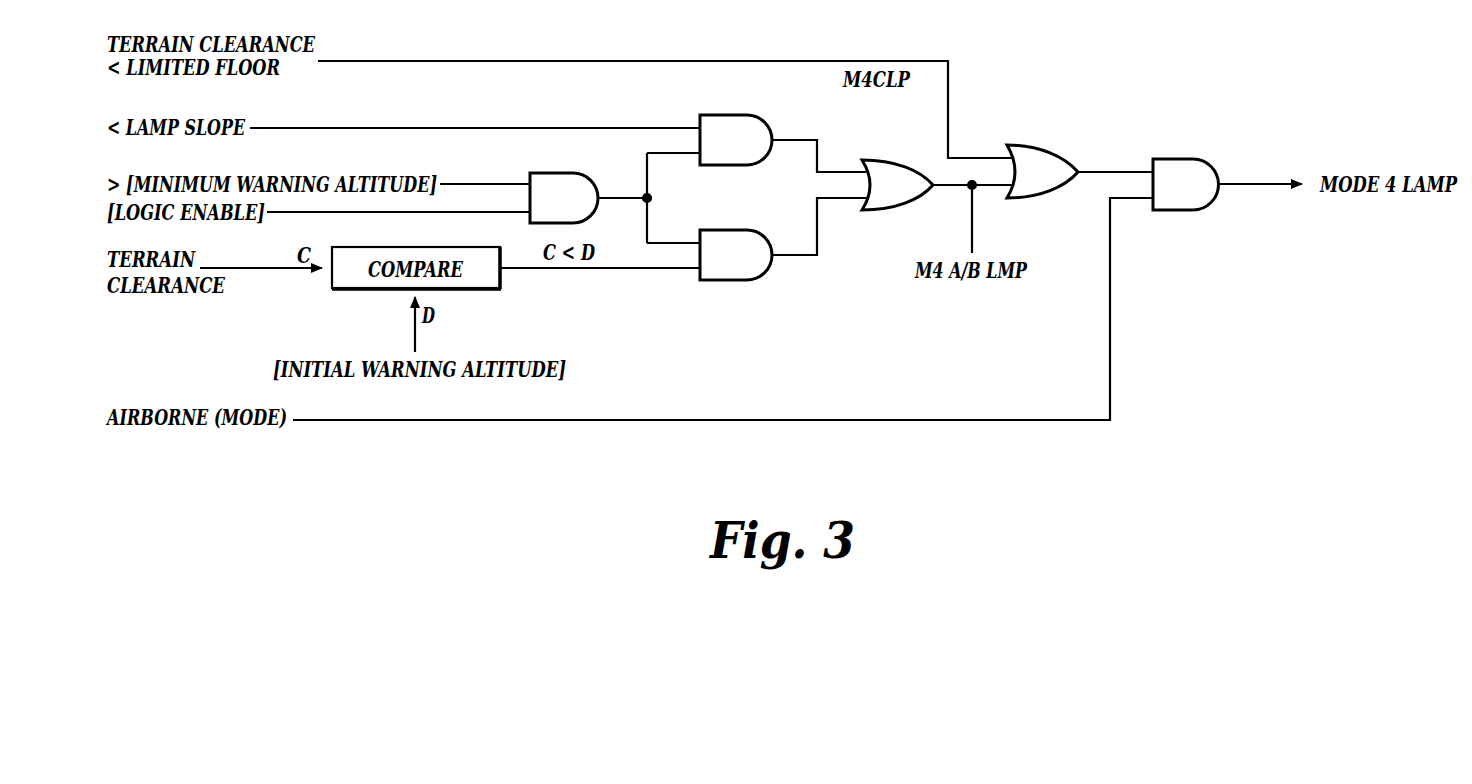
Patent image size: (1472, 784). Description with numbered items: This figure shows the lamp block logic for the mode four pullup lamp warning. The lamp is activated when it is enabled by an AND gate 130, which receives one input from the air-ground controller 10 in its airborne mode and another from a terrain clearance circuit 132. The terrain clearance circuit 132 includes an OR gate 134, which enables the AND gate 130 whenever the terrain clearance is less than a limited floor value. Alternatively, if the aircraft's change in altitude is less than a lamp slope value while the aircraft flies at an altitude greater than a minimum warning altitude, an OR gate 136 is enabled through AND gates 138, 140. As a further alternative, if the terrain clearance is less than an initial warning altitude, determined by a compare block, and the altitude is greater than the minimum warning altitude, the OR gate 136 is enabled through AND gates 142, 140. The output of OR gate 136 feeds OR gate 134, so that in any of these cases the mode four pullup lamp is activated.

The air-ground controller 10 is at (418, 421).
The AND gate 130 is at (1190, 165).
The terrain clearance circuit 132 is at (860, 61).
The OR gate 134 is at (1038, 150).
The OR gate 136 is at (885, 210).
The AND gate 138 is at (737, 115).
The AND gate 140 is at (570, 182).
The AND gate 142 is at (740, 280).